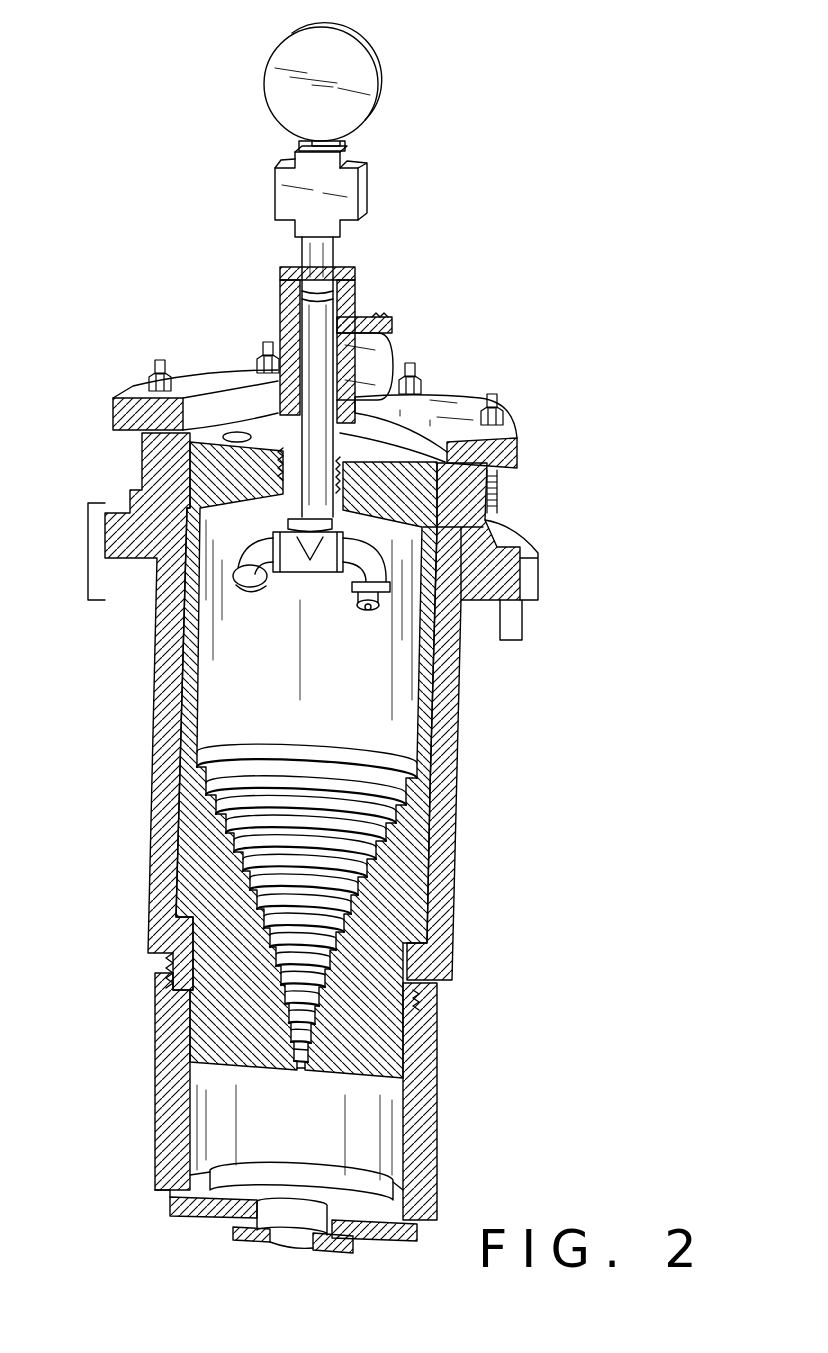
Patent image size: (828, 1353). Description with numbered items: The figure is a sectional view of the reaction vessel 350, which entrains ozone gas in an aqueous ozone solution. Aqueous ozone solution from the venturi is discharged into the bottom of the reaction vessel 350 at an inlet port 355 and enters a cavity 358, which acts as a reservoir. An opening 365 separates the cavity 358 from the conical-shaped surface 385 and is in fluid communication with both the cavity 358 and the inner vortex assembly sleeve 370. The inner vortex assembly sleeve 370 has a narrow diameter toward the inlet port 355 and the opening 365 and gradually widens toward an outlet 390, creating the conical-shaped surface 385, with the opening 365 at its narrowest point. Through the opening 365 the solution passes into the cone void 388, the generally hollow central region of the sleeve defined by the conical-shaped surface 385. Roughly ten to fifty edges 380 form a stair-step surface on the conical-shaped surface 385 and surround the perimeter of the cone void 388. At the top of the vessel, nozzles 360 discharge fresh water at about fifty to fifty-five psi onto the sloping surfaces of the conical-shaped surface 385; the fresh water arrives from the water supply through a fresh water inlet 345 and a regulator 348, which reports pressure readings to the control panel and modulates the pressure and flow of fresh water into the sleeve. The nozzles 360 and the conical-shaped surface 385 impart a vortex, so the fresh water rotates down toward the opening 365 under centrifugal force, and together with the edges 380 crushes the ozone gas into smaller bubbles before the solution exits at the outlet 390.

The regulator 348 is at (350, 55).
The fresh water inlet 345 is at (373, 360).
The outlet 390 is at (235, 432).
The reaction vessel 350 is at (567, 643).
The nozzles 360 is at (240, 575).
The cone void 388 is at (255, 715).
The edges 380 is at (210, 788).
The inner vortex assembly sleeve 370 is at (380, 892).
The conical-shaped surface 385 is at (265, 903).
The cavity 358 is at (226, 1108).
The opening 365 is at (402, 1083).
The inlet port 355 is at (289, 1253).